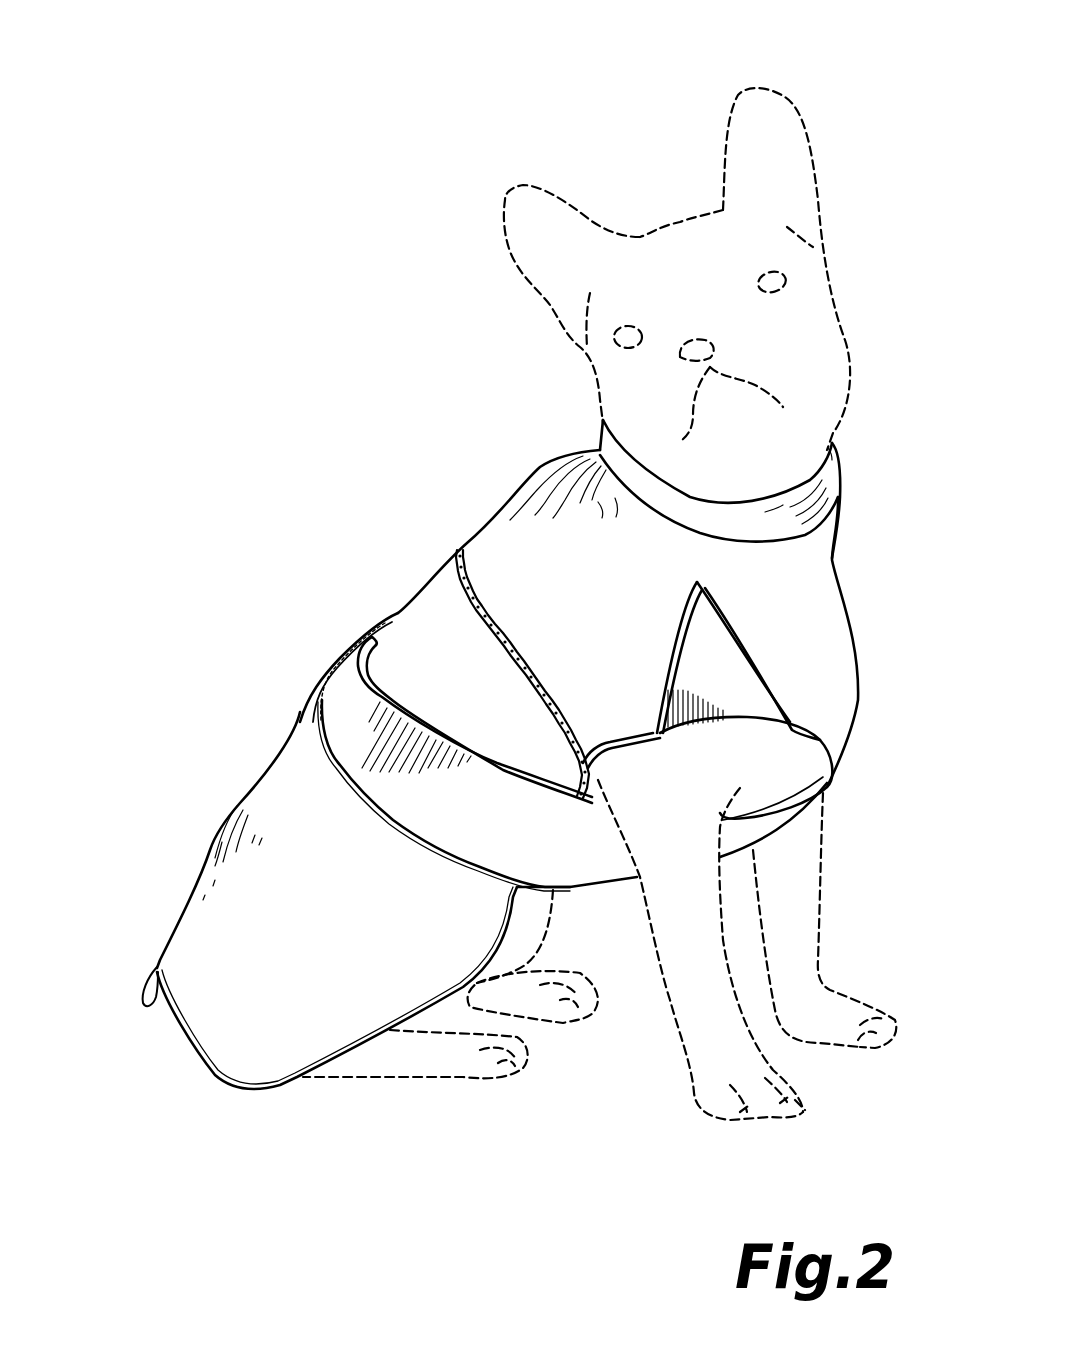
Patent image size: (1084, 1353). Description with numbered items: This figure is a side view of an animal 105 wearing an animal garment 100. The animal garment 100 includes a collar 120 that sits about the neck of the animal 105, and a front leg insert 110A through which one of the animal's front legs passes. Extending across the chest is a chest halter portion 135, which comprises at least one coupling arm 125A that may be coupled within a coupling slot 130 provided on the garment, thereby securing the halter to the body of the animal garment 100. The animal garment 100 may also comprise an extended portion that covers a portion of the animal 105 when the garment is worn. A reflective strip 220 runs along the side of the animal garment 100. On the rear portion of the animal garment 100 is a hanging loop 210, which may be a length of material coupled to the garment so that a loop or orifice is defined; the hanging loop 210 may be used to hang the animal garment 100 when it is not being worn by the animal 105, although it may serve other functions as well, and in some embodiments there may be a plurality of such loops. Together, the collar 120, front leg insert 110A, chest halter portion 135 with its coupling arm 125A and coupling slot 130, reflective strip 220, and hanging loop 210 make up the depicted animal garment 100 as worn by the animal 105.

The animal 105 is at (817, 78).
The animal garment 100 is at (465, 490).
The collar 120 is at (840, 473).
The coupling slot 130 is at (313, 662).
The back panel 125A is at (387, 835).
The hanging loop 210 is at (140, 998).
The front leg insert 110A is at (695, 727).
The chest halter portion 135 is at (763, 853).
The reflective strip 220 is at (533, 657).